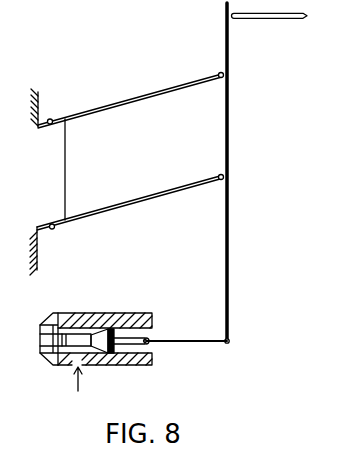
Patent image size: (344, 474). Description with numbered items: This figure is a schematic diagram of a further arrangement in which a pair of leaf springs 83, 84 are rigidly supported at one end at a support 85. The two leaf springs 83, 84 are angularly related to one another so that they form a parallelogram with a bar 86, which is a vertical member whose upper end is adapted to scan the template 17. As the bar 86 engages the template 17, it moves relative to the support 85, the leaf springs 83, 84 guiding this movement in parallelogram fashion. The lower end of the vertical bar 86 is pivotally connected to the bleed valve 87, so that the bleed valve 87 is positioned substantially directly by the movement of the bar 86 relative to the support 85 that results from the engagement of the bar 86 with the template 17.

The template 17 is at (248, 18).
The leaf spring 83 is at (111, 205).
The leaf spring 84 is at (105, 105).
The support 85 is at (50, 181).
The bar 86 is at (229, 125).
The bleed valve 87 is at (45, 341).